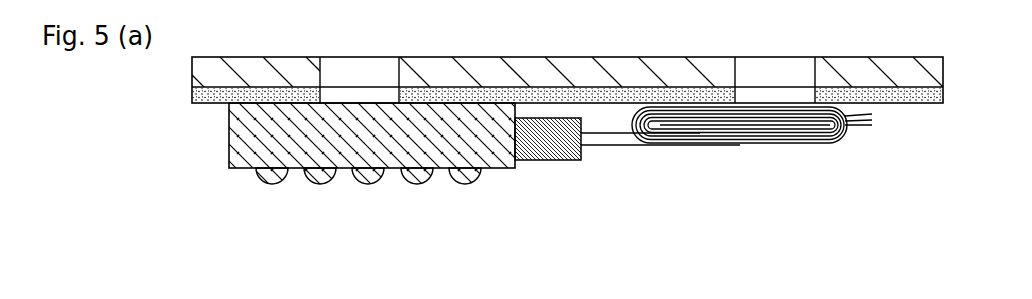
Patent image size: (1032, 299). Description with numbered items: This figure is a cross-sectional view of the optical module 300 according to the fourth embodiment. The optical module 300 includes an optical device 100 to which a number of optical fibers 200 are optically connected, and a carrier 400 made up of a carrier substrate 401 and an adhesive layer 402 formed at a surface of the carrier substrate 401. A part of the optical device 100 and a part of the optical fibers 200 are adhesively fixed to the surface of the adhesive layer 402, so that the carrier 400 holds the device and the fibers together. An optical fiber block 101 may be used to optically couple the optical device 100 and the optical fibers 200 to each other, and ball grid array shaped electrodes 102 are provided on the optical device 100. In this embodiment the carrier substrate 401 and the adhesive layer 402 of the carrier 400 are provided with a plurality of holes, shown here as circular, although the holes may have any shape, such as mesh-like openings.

The optical device 100 is at (230, 170).
The optical fiber block 101 is at (553, 161).
The ball grid array shaped electrodes 102 is at (482, 190).
The optical fibers 200 is at (737, 146).
The optical module 300 is at (185, 57).
The carrier 400 is at (945, 57).
The carrier substrate 401 is at (918, 62).
The adhesive layer 402 is at (918, 104).